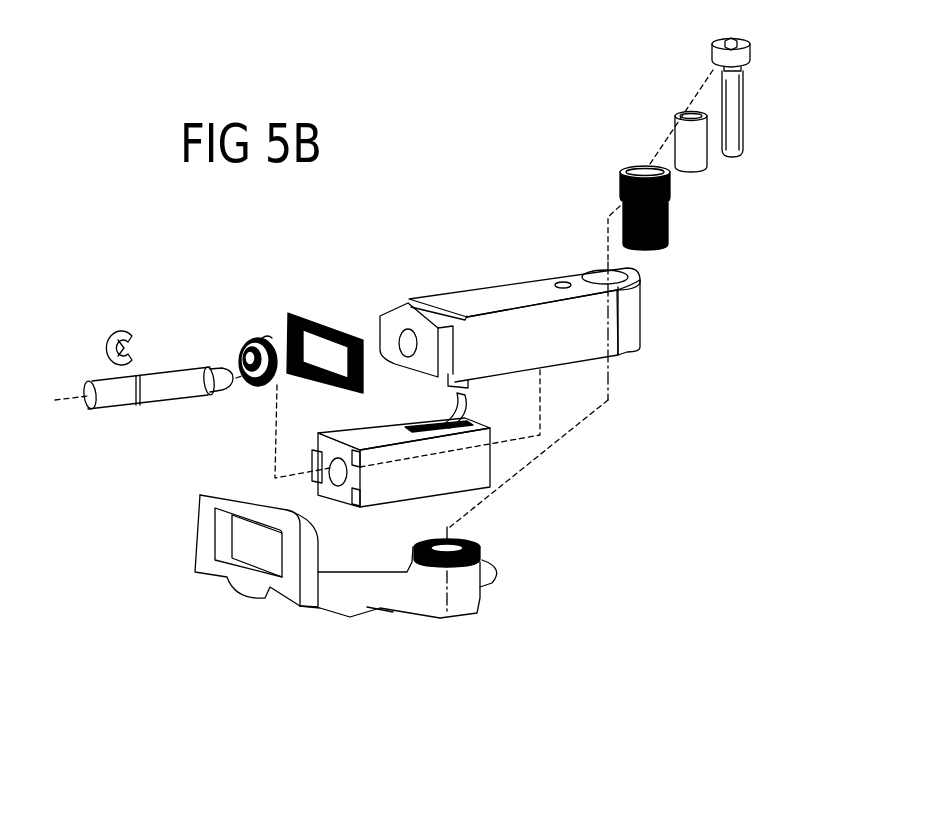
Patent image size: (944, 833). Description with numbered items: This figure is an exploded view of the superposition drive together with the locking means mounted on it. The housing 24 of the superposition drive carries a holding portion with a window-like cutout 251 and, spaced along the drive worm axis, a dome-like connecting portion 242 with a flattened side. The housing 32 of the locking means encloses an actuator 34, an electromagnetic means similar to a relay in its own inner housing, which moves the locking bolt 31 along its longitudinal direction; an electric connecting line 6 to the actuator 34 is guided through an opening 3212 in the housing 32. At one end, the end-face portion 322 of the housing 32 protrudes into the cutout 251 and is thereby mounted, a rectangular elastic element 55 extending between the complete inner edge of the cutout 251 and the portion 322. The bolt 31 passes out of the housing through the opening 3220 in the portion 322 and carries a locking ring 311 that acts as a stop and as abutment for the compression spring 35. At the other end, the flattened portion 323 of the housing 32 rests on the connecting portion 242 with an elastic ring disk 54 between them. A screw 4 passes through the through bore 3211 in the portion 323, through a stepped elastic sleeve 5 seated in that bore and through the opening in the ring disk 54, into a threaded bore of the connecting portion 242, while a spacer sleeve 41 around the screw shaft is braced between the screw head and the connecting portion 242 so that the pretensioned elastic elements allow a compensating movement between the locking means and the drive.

The screw 4 is at (734, 115).
The spacer sleeve 41 is at (695, 161).
The elastic sleeve 5 is at (668, 219).
The housing 32 is at (580, 276).
The portion 323 is at (632, 312).
The through bore 3211 is at (637, 272).
The opening 3212 is at (563, 282).
The end-face portion 322 is at (410, 299).
The opening 3220 is at (408, 340).
The elastic element 55 is at (315, 318).
The compression spring 35 is at (256, 338).
The locking bolt 31 is at (115, 400).
The locking ring 311 is at (121, 332).
The actuator 34 is at (418, 466).
The electric connecting line 6 is at (463, 404).
The housing 24 is at (341, 585).
The connecting portion 242 is at (468, 580).
The window-like cutout 251 is at (222, 532).
The ring disk 54 is at (413, 545).